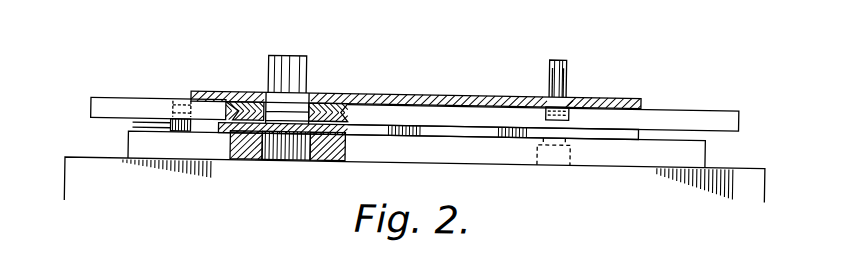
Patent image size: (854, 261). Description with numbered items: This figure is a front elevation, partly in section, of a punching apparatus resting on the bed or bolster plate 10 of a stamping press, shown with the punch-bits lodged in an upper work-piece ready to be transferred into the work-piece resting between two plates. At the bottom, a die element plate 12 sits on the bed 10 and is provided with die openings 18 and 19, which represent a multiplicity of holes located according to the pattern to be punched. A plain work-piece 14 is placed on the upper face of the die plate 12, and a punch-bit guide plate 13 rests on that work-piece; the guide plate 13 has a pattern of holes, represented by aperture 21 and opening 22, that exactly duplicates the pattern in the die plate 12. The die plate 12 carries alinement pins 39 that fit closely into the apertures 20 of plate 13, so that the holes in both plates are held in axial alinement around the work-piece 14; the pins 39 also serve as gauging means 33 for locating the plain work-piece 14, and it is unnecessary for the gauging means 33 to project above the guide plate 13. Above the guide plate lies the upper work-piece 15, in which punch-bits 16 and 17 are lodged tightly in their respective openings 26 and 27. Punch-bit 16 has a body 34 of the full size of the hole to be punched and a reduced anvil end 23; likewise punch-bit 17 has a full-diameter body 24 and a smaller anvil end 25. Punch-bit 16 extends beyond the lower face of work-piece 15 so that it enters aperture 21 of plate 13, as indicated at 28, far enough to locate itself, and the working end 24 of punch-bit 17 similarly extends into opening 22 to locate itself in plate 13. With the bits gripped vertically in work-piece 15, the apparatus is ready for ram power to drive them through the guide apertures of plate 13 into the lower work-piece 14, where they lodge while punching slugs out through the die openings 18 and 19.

The bed or bolster plate 10 is at (738, 157).
The die element plate 12 is at (416, 150).
The punch-bit guide plate 13 is at (543, 115).
The work-piece 14 is at (600, 128).
The work-piece 15 is at (435, 89).
The punch-bit 16 is at (287, 63).
The punch-bit 17 is at (563, 64).
The die opening 18 is at (563, 135).
The die opening 19 is at (300, 125).
The aperture 20 is at (178, 104).
The aperture 21 is at (292, 113).
The opening 22 is at (568, 106).
The anvil end 23 is at (300, 78).
The body 24 is at (552, 84).
The anvil end 25 is at (567, 70).
The opening 26 is at (312, 97).
The opening 27 is at (585, 89).
The projecting portion of punch-bit 28 is at (334, 105).
The gauging means 33 is at (190, 121).
The body 34 is at (266, 91).
The alinement pin 39 is at (130, 122).